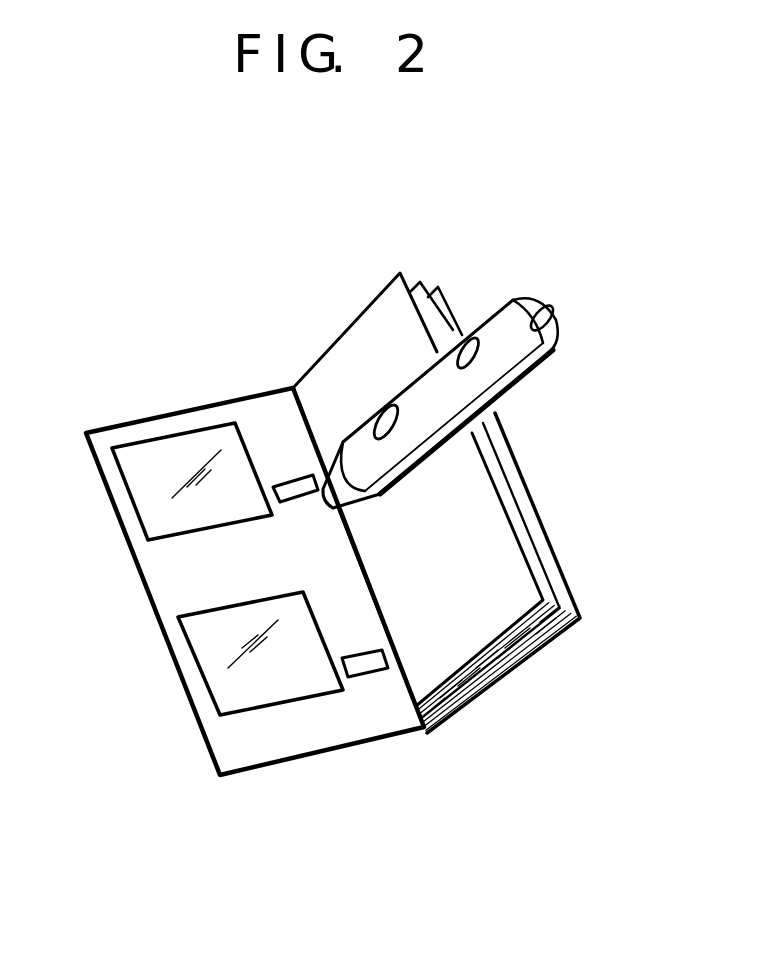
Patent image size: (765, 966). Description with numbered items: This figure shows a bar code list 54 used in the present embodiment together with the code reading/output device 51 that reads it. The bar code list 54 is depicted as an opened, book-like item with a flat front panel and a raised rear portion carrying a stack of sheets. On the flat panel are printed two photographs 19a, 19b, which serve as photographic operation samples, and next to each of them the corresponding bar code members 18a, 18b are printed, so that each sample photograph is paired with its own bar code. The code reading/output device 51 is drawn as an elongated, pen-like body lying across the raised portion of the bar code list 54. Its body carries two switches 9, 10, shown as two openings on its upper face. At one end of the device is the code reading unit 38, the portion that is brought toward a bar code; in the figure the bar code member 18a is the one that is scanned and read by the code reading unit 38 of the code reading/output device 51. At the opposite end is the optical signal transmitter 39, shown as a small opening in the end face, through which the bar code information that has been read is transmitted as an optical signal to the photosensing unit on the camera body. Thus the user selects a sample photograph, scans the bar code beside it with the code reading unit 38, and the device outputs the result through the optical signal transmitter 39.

The switch 9 is at (380, 417).
The switch 10 is at (478, 340).
The bar code member 18a is at (300, 490).
The bar code member 18b is at (368, 667).
The photograph 19a is at (143, 490).
The photograph 19b is at (207, 660).
The code reading unit 38 is at (363, 508).
The optical signal transmitter 39 is at (548, 318).
The code reading/output device 51 is at (472, 404).
The bar code list 54 is at (480, 693).